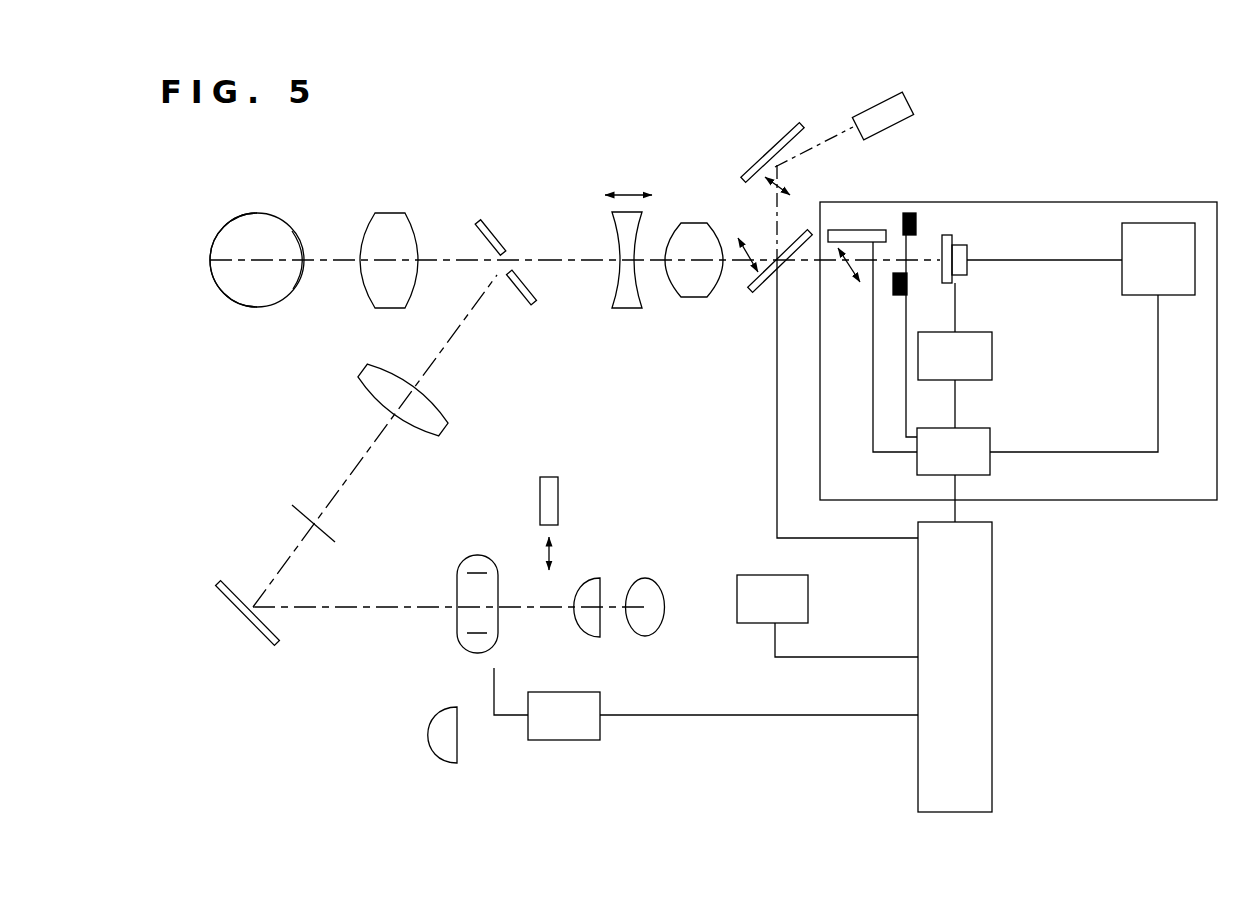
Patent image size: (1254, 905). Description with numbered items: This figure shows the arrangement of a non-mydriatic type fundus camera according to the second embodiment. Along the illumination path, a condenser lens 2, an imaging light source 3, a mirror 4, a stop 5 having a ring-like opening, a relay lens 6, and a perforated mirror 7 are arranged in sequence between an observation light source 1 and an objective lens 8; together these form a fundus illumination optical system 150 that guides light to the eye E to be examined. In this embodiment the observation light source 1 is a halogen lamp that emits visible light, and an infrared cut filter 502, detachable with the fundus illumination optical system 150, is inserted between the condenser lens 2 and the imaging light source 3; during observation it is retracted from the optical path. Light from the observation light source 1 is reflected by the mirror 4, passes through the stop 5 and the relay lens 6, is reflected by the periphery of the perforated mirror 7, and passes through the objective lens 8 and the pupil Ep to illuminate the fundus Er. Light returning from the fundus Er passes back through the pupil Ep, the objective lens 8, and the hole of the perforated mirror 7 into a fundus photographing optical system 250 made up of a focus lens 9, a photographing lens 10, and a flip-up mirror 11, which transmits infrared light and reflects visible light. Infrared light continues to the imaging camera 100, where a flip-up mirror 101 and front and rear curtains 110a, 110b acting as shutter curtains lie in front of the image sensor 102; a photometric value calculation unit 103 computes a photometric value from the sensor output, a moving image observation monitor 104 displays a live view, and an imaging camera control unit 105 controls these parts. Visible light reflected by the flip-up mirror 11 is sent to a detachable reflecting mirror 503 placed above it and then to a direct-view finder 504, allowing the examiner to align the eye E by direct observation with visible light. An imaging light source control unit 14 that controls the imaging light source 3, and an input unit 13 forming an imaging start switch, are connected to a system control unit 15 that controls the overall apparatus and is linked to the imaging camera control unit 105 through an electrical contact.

The eye to be examined E is at (257, 218).
The pupil Ep is at (293, 240).
The fundus Er is at (215, 277).
The observation light source 1 is at (645, 582).
The condenser lens 2 is at (595, 583).
The imaging light source 3 is at (488, 565).
The mirror 4 is at (224, 583).
The stop 5 is at (333, 540).
The relay lens 6 is at (387, 363).
The perforated mirror 7 is at (483, 220).
The objective lens 8 is at (400, 222).
The focus lens 9 is at (627, 300).
The photographing lens 10 is at (692, 287).
The flip-up mirror 11 is at (802, 232).
The input unit 13 is at (793, 598).
The imaging light source control unit 14 is at (587, 697).
The system control unit 15 is at (990, 610).
The imaging camera 100 is at (1053, 202).
The flip-up mirror 101 is at (838, 230).
The image sensor 102 is at (962, 250).
The photometric value calculation unit 103 is at (972, 330).
The moving image observation monitor 104 is at (1147, 225).
The imaging camera control unit 105 is at (977, 427).
The front curtain 110a is at (893, 287).
The rear curtain 110b is at (912, 213).
The fundus illumination optical system 150 is at (441, 360).
The fundus photographing optical system 250 is at (544, 256).
The infrared cut filter 502 is at (550, 480).
The reflecting mirror 503 is at (775, 143).
The direct-view finder 504 is at (872, 105).